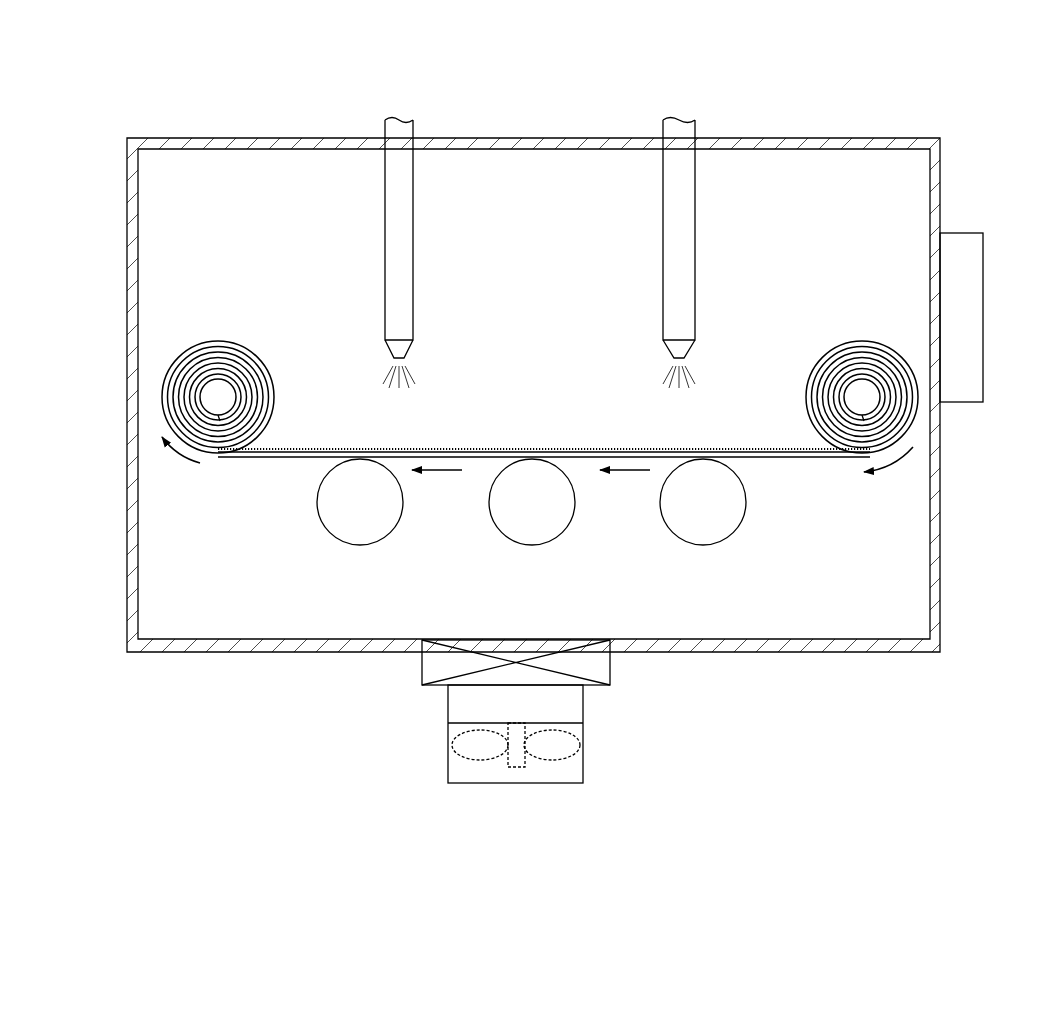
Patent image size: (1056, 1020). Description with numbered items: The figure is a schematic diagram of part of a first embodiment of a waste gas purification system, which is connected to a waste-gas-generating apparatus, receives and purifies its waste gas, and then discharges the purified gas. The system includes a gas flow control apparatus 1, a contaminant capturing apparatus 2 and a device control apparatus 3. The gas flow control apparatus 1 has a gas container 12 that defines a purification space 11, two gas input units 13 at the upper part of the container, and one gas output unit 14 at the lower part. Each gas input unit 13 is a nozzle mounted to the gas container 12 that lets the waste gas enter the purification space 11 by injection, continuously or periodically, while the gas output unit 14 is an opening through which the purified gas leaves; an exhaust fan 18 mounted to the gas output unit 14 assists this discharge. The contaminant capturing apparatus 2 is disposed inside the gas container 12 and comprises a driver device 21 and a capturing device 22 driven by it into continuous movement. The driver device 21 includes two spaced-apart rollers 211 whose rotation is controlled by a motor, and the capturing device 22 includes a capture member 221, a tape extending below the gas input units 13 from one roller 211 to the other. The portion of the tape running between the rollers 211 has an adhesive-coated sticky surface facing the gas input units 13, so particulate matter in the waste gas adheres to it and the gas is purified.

The gas flow control apparatus 1 is at (903, 120).
The purification space 11 is at (891, 197).
The gas container 12 is at (167, 140).
The gas input unit 13 is at (395, 200).
The gas output unit 14 is at (612, 642).
The exhaust fan 18 is at (463, 745).
The contaminant capturing apparatus 2 is at (573, 327).
The driver device 21 is at (205, 398).
The capturing device 22 is at (915, 330).
The roller 211 is at (218, 397).
The capture member 221 is at (772, 448).
The device control apparatus 3 is at (991, 258).